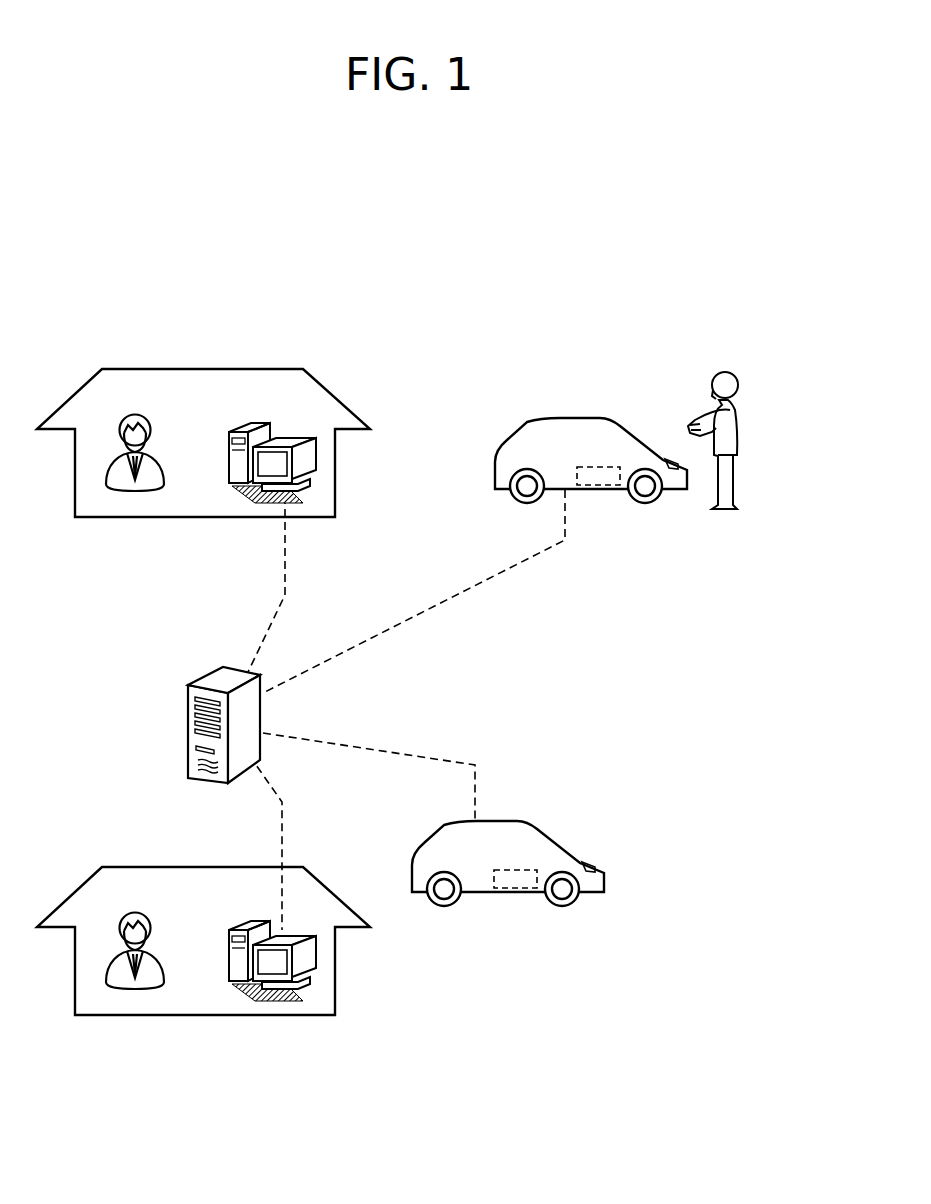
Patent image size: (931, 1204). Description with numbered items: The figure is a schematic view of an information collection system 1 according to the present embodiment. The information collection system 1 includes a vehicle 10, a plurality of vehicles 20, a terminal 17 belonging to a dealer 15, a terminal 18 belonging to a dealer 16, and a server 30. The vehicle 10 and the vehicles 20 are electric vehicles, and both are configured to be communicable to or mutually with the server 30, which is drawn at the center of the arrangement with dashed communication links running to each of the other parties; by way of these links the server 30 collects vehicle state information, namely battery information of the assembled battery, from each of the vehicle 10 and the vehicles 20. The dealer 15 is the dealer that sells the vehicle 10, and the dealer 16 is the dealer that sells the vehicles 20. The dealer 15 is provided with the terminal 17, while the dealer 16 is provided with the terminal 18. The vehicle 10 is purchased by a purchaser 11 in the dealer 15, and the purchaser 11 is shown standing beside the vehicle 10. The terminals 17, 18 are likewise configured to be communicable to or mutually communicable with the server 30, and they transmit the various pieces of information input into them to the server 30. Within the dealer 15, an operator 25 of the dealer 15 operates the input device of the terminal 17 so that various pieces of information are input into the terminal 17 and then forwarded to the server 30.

The information collection system 1 is at (358, 247).
The vehicle 10 is at (500, 475).
The purchaser 11 is at (730, 447).
The dealer 15 is at (213, 380).
The dealer 16 is at (212, 878).
The terminal 17 is at (244, 421).
The terminal 18 is at (244, 919).
The vehicles 20 is at (418, 862).
The operator 25 is at (150, 475).
The server 30 is at (248, 713).